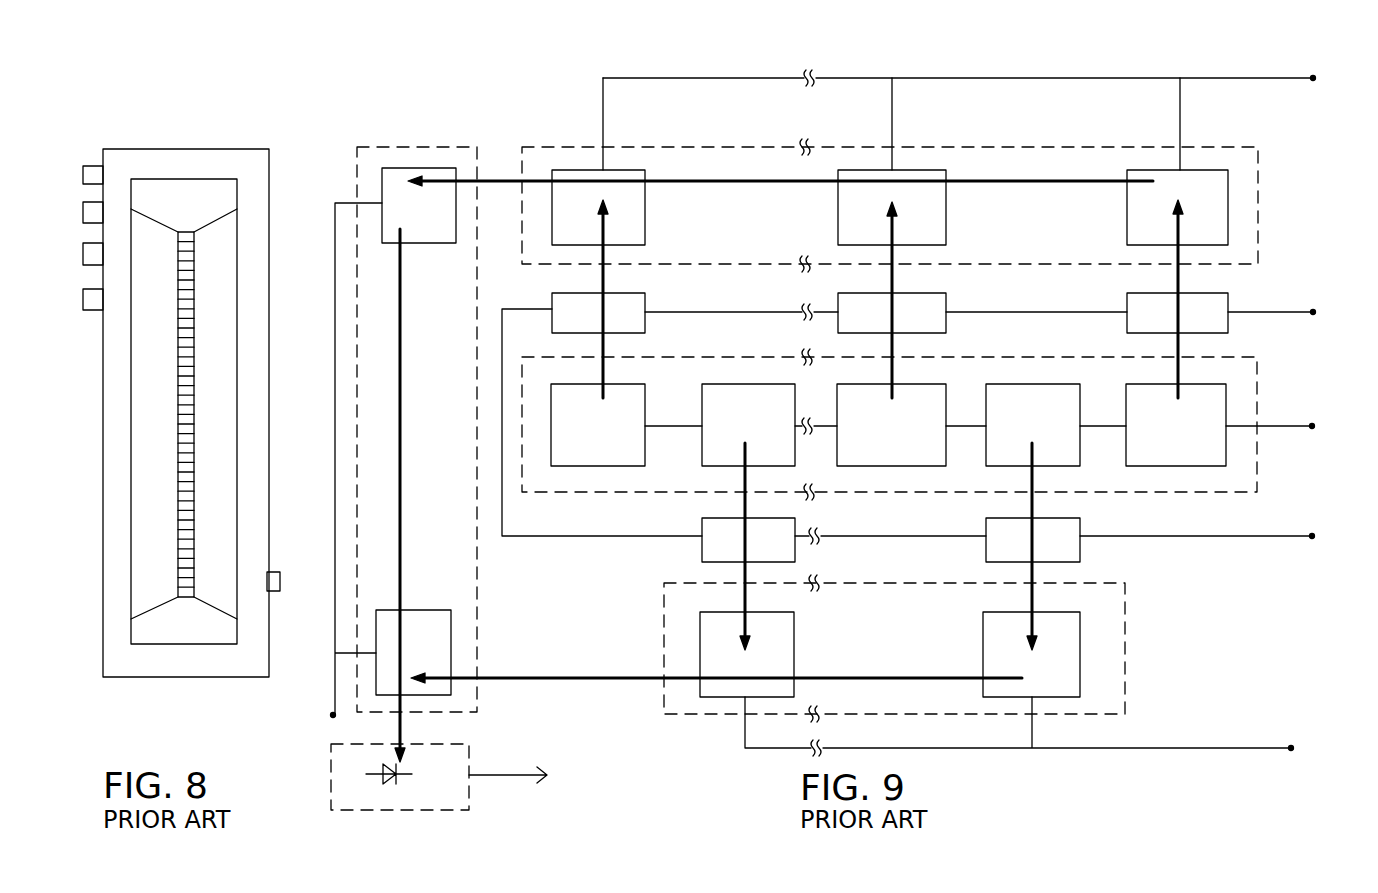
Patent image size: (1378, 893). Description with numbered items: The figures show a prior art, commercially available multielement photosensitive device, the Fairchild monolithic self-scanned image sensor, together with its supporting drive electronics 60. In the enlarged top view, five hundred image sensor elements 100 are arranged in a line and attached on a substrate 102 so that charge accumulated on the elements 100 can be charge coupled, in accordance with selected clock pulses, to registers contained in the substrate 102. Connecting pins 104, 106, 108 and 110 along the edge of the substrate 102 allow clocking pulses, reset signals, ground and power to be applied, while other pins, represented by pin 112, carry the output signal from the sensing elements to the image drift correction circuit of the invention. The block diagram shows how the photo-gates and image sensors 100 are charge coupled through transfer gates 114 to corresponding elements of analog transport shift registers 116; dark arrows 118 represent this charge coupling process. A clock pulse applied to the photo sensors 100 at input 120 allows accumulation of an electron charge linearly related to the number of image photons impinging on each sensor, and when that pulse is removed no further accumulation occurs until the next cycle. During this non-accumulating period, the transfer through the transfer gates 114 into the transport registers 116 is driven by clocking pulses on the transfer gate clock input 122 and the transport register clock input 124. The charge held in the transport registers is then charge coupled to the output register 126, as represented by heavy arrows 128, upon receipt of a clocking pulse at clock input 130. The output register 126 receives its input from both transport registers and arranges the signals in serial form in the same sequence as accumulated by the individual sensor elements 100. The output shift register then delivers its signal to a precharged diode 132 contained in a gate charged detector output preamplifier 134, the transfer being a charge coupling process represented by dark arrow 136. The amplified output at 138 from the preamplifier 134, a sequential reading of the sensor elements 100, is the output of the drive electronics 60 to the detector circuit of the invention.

In FIG. 9, the drive electronics 60 is at (1006, 65).
In FIG. 8, the image sensor elements 100 is at (194, 390).
In FIG. 9, the image sensor elements 100 is at (1257, 490).
In FIG. 8, the substrate 102 is at (222, 287).
In FIG. 8, the connecting pin 104 is at (83, 168).
In FIG. 8, the connecting pin 106 is at (83, 207).
In FIG. 8, the connecting pin 108 is at (83, 260).
In FIG. 8, the connecting pin 110 is at (83, 305).
In FIG. 8, the output pin 112 is at (280, 578).
In FIG. 9, the transfer gates 114 is at (640, 277).
In FIG. 9, the analog transport shift registers 116 is at (1222, 147).
In FIG. 9, the dark arrows 118 is at (645, 250).
In FIG. 9, the clock input 120 is at (1312, 427).
In FIG. 9, the transfer gate clock input 122 is at (1313, 312).
In FIG. 9, the transport register clock input 124 is at (1291, 748).
In FIG. 9, the output register 126 is at (477, 586).
In FIG. 9, the heavy arrows 128 is at (492, 181).
In FIG. 9, the clock input 130 is at (333, 715).
In FIG. 9, the precharged diode 132 is at (392, 790).
In FIG. 9, the gate charged detector output preamplifier 134 is at (469, 745).
In FIG. 9, the dark arrow 136 is at (400, 733).
In FIG. 9, the amplified output 138 is at (525, 775).